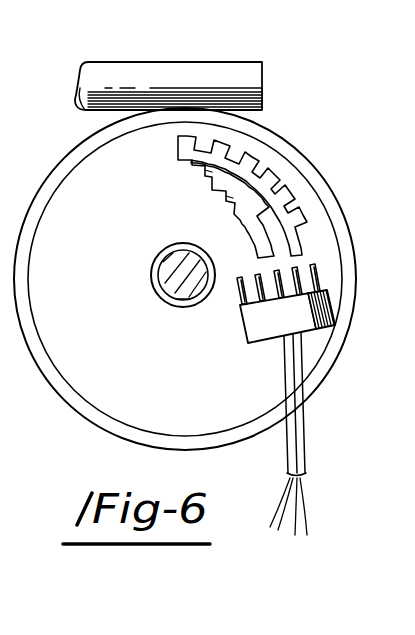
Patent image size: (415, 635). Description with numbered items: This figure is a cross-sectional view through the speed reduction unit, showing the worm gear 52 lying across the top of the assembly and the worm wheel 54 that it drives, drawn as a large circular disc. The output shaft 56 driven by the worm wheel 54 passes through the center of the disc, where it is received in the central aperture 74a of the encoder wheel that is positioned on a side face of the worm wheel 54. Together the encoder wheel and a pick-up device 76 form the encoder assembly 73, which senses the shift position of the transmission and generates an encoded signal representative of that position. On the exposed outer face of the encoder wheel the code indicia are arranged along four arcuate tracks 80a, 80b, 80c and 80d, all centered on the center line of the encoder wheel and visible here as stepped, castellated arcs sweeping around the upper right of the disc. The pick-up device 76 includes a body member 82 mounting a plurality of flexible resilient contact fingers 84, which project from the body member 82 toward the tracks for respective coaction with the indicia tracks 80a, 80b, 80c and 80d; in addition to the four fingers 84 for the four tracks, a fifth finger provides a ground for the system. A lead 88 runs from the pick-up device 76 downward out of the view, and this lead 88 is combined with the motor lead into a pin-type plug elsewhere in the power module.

The worm gear 52 is at (198, 62).
The worm wheel 54 is at (305, 153).
The output shaft 56 is at (170, 251).
The encoder assembly 73 is at (350, 230).
The central aperture 74a is at (178, 303).
The pick-up device 76 is at (312, 313).
The arcuate track 80a is at (182, 146).
The arcuate track 80b is at (192, 163).
The arcuate track 80c is at (210, 178).
The arcuate track 80d is at (230, 208).
The body member 82 is at (243, 338).
The contact fingers 84 is at (323, 275).
The lead 88 is at (306, 431).